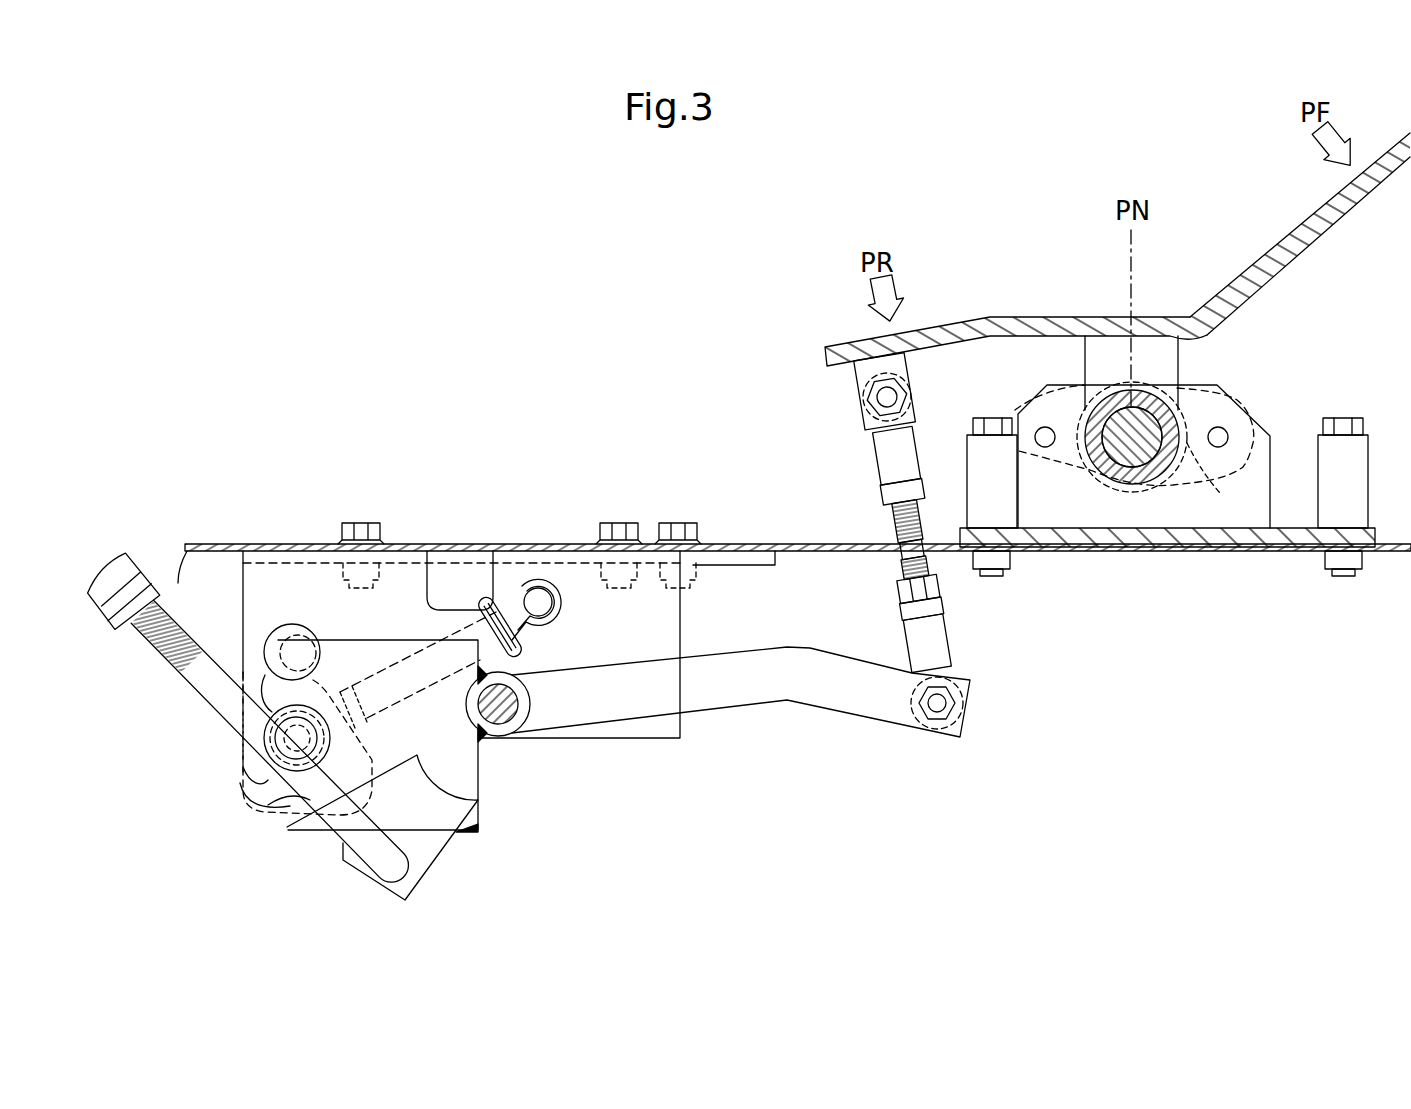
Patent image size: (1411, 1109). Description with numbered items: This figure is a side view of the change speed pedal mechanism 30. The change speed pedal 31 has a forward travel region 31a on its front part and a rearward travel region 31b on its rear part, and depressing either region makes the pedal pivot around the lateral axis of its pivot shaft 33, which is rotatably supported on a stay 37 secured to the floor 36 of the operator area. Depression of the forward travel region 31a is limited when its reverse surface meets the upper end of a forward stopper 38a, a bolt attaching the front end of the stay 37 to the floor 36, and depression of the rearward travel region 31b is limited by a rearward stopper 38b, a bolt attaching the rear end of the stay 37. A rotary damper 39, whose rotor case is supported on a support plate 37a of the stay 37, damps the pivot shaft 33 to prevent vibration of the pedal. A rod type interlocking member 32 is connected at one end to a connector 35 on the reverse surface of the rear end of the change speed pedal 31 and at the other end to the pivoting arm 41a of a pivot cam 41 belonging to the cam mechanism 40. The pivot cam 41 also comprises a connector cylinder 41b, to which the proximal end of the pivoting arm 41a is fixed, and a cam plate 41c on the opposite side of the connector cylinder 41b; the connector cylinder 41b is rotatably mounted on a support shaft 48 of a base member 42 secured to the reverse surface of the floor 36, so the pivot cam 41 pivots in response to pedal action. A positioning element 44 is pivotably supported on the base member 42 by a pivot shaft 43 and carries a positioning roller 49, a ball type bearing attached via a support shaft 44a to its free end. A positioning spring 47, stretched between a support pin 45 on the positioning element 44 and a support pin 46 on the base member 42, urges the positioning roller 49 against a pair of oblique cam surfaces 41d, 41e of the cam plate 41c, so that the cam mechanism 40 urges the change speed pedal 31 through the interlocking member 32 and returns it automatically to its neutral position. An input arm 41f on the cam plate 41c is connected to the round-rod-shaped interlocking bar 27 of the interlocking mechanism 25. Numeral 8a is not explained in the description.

The floor panel 8a is at (742, 544).
The interlocking mechanism 25 is at (163, 542).
The interlocking bar 27 is at (343, 827).
The change speed pedal mechanism 30 is at (596, 290).
The change speed pedal 31 is at (1117, 260).
The forward travel region 31a is at (1320, 203).
The rearward travel region 31b is at (941, 312).
The interlocking member 32 is at (885, 473).
The pivot shaft 33 is at (1117, 453).
The connector 35 is at (850, 372).
The floor 36 is at (303, 532).
The stay 37 is at (1138, 548).
The support plate 37a is at (1210, 385).
The forward stopper 38a is at (1343, 418).
The rearward stopper 38b is at (992, 418).
The rotary damper 39 is at (1205, 485).
The cam mechanism 40 is at (580, 832).
The pivot cam 41 is at (757, 715).
The pivoting arm 41a is at (808, 690).
The connector cylinder 41b is at (515, 722).
The cam plate 41c is at (370, 642).
The oblique cam surface 41d is at (270, 655).
The oblique cam surface 41e is at (303, 802).
The input arm 41f is at (425, 850).
The base member 42 is at (680, 598).
The pivot shaft 43 is at (240, 705).
The positioning element 44 is at (240, 790).
The support shaft 44a is at (245, 745).
The support pin 45 is at (350, 733).
The support pin 46 is at (540, 600).
The positioning spring 47 is at (494, 600).
The support shaft 48 is at (505, 692).
The positioning roller 49 is at (245, 770).